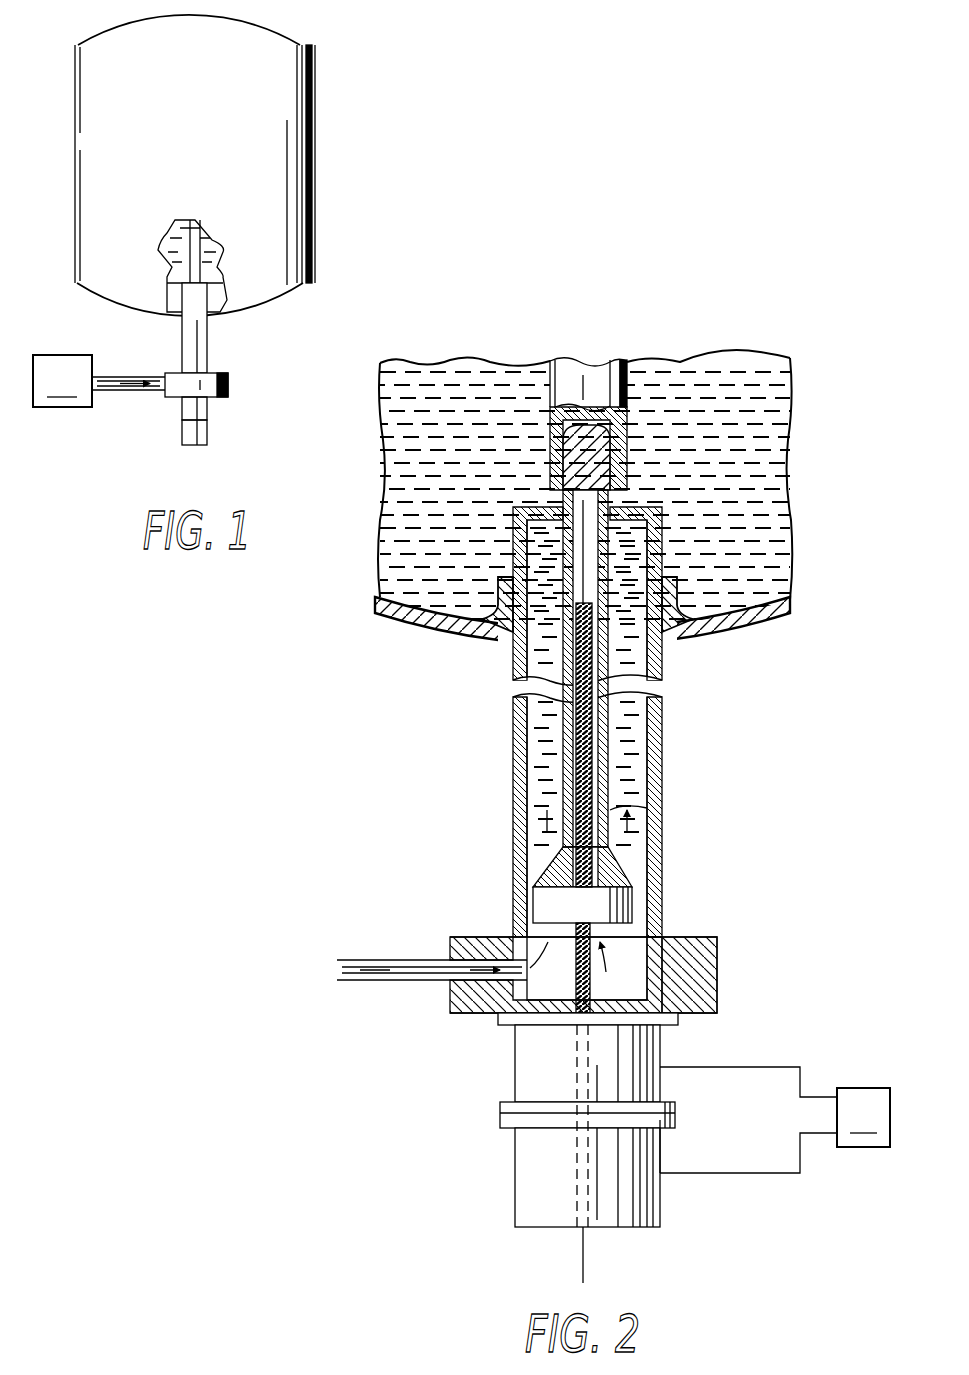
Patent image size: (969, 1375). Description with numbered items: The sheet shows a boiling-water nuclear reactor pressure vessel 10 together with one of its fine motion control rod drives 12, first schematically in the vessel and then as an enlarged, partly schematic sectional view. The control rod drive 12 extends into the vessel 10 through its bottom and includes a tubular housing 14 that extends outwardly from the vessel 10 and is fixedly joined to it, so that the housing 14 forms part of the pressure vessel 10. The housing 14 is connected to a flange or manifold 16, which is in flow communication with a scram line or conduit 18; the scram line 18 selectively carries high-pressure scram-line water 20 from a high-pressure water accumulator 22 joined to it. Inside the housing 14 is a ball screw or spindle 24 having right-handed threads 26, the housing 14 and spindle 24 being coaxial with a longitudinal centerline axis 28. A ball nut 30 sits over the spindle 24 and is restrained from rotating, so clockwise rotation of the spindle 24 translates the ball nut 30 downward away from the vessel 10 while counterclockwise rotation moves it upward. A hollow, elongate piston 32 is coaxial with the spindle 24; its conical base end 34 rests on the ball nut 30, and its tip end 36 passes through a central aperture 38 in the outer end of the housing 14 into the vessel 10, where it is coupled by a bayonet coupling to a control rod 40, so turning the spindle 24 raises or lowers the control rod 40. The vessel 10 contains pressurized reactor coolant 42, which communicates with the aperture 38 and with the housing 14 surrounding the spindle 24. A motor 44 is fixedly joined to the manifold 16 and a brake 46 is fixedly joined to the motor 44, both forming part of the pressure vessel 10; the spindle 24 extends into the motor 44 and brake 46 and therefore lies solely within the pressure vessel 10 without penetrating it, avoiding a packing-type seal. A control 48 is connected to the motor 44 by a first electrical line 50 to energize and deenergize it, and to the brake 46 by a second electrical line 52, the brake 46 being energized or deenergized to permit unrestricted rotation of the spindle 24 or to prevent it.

In FIG. 1, the nuclear reactor pressure vessel 10 is at (315, 120).
In FIG. 2, the nuclear reactor pressure vessel 10 is at (440, 622).
In FIG. 1, the fine motion control rod drive 12 is at (210, 337).
In FIG. 2, the fine motion control rod drive 12 is at (666, 756).
In FIG. 2, the tubular housing 14 is at (512, 740).
In FIG. 1, the flange or manifold 16 is at (230, 388).
In FIG. 2, the flange or manifold 16 is at (700, 937).
In FIG. 1, the scram line or conduit 18 is at (130, 393).
In FIG. 2, the scram line or conduit 18 is at (393, 957).
In FIG. 2, the high-pressure scram-line water 20 is at (640, 500).
In FIG. 1, the high-pressure water accumulator 22 is at (62, 381).
In FIG. 2, the ball screw or spindle 24 is at (592, 986).
In FIG. 2, the right-handed threads 26 is at (520, 935).
In FIG. 2, the longitudinal centerline axis 28 is at (598, 1255).
In FIG. 2, the ball nut 30 is at (640, 900).
In FIG. 2, the hollow elongate piston 32 is at (640, 810).
In FIG. 2, the conical base end 34 is at (620, 870).
In FIG. 1, the tip end 36 is at (220, 256).
In FIG. 2, the tip end 36 is at (606, 453).
In FIG. 2, the central aperture 38 is at (555, 505).
In FIG. 1, the control rod 40 is at (205, 240).
In FIG. 2, the control rod 40 is at (610, 365).
In FIG. 1, the pressurized coolant 42 is at (160, 255).
In FIG. 2, the pressurized coolant 42 is at (410, 485).
In FIG. 1, the motor 44 is at (210, 413).
In FIG. 2, the motor 44 is at (515, 1047).
In FIG. 1, the brake 46 is at (210, 440).
In FIG. 2, the brake 46 is at (515, 1172).
In FIG. 2, the control 48 is at (863, 1117).
In FIG. 2, the first electrical line 50 is at (762, 1067).
In FIG. 2, the second electrical line 52 is at (735, 1172).